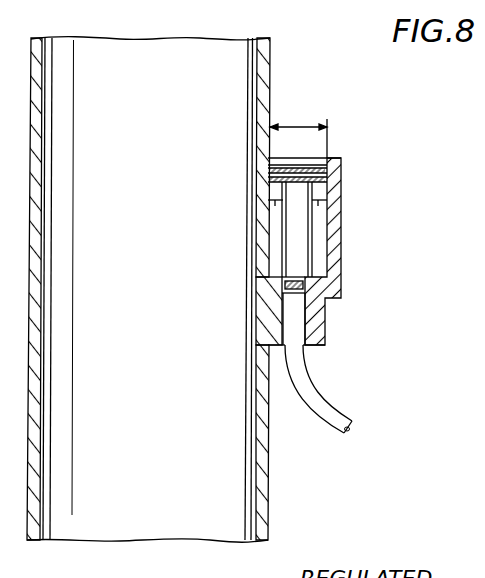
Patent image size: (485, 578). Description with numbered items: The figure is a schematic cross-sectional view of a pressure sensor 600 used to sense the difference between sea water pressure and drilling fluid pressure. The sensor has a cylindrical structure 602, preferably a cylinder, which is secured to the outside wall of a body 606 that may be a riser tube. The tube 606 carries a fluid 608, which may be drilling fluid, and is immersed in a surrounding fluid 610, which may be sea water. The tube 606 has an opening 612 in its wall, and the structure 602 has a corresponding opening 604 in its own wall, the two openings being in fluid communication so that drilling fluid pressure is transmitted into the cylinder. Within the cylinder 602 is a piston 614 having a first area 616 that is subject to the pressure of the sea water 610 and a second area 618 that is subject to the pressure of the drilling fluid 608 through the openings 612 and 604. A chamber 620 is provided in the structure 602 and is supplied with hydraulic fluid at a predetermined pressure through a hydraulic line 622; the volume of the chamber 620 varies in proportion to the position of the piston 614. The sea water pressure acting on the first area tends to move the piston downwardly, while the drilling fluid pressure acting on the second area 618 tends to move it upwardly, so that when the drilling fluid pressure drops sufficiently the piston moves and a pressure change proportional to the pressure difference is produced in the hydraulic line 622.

The pressure sensor 600 is at (324, 279).
The cylindrical structure 602 is at (333, 178).
The opening 604 is at (271, 226).
The body 606 is at (267, 92).
The fluid 608 is at (235, 73).
The fluid 610 is at (404, 283).
The opening 612 is at (262, 267).
The piston 614 is at (302, 240).
The first area 616 is at (304, 127).
The second area 618 is at (338, 210).
The chamber 620 is at (303, 318).
The hydraulic line 622 is at (322, 392).